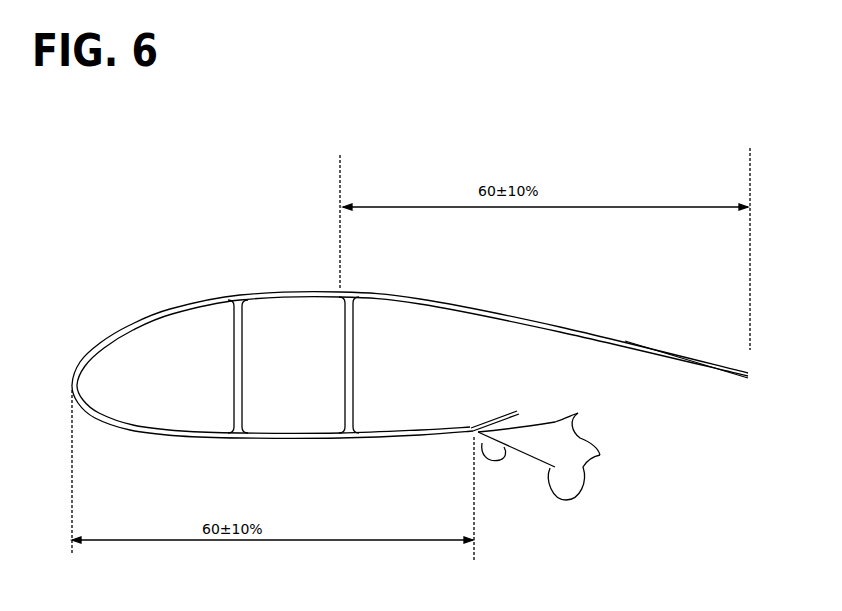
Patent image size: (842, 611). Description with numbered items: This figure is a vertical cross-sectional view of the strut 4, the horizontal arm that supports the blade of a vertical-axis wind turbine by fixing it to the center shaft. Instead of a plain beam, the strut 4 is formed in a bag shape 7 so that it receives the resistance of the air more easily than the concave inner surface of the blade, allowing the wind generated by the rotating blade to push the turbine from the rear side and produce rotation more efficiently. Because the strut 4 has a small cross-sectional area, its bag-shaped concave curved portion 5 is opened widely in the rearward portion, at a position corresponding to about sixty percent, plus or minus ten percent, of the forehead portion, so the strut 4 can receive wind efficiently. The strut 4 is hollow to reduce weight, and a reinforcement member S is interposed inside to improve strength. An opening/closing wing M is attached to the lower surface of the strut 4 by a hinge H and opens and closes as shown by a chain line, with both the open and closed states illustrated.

The strut 4 is at (256, 288).
The bag-shaped concave curved portion 5 is at (627, 342).
The bag shape 7 is at (463, 383).
The reinforcement member S is at (347, 400).
The hinge H is at (476, 465).
The opening/closing wing M is at (541, 456).